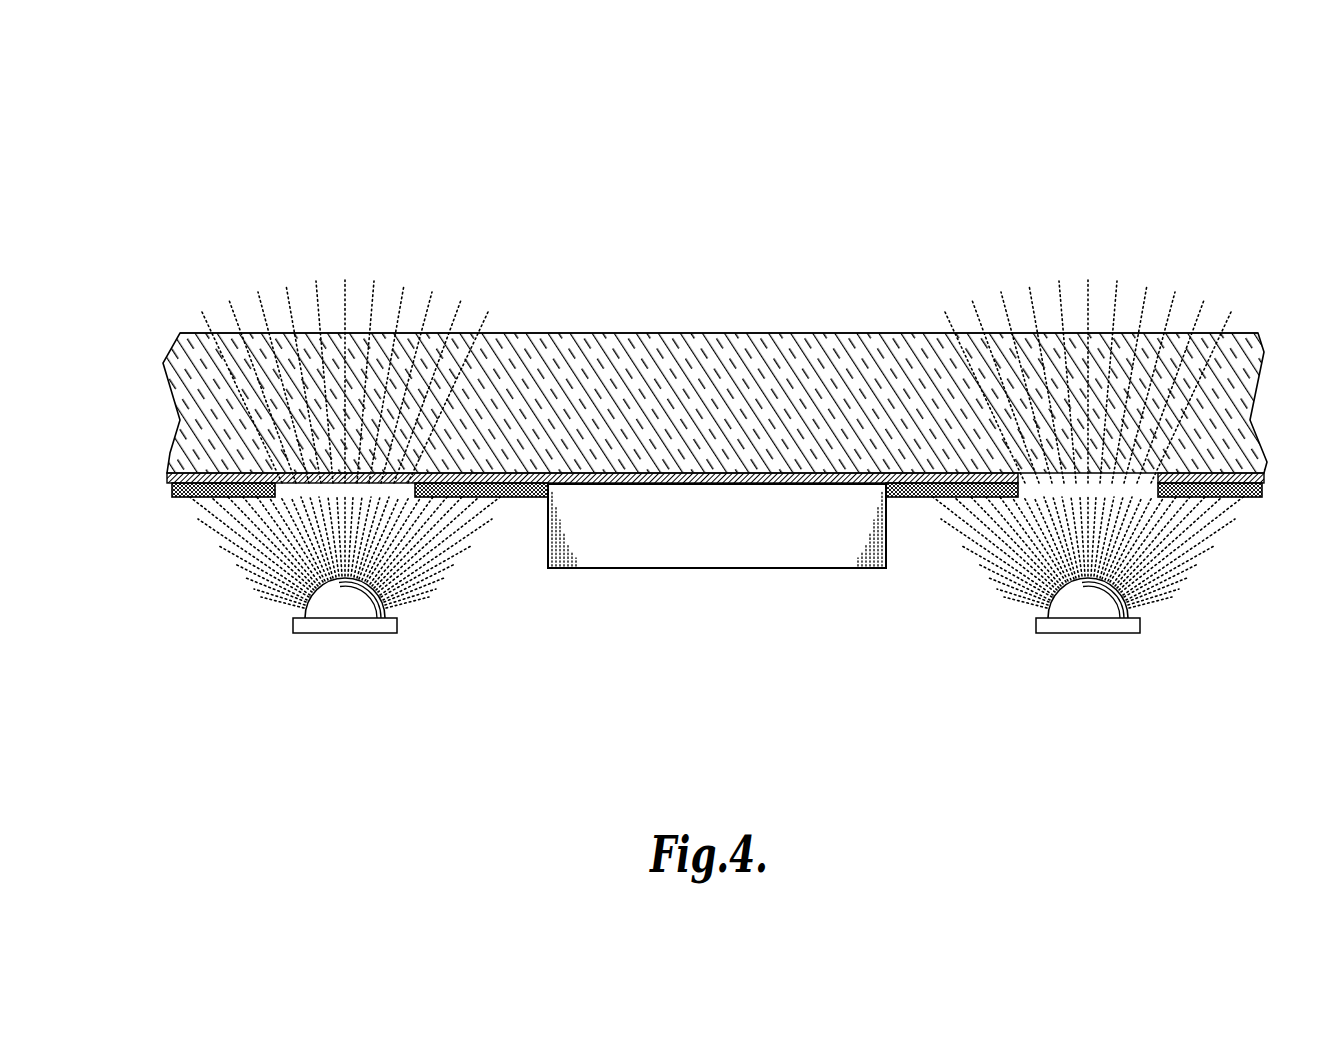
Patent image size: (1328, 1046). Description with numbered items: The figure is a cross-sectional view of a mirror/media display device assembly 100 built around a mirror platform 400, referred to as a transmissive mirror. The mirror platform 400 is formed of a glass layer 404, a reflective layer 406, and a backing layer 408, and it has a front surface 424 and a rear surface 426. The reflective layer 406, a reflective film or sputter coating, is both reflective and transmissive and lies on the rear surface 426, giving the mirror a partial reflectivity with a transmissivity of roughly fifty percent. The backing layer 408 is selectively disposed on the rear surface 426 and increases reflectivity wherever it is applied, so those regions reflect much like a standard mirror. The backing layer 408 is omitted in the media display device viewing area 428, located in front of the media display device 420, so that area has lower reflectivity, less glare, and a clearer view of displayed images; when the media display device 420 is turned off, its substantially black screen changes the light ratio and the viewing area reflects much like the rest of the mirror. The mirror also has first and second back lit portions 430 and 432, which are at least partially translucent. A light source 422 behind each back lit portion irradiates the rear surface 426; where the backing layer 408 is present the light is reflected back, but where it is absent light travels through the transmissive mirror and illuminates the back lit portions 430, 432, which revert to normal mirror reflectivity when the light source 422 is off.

The mirror/media display device assembly 100 is at (477, 166).
The mirror platform 400 is at (165, 257).
The glass layer 404 is at (1234, 333).
The reflective layer 406 is at (1224, 498).
The backing layer 408 is at (520, 498).
The media display device 420 is at (668, 570).
The light source 422 is at (316, 634).
The front surface 424 is at (926, 333).
The rear surface 426 is at (930, 498).
The media display device viewing area 428 is at (718, 260).
The first back lit portion 430 is at (335, 308).
The second back lit portion 432 is at (1097, 304).